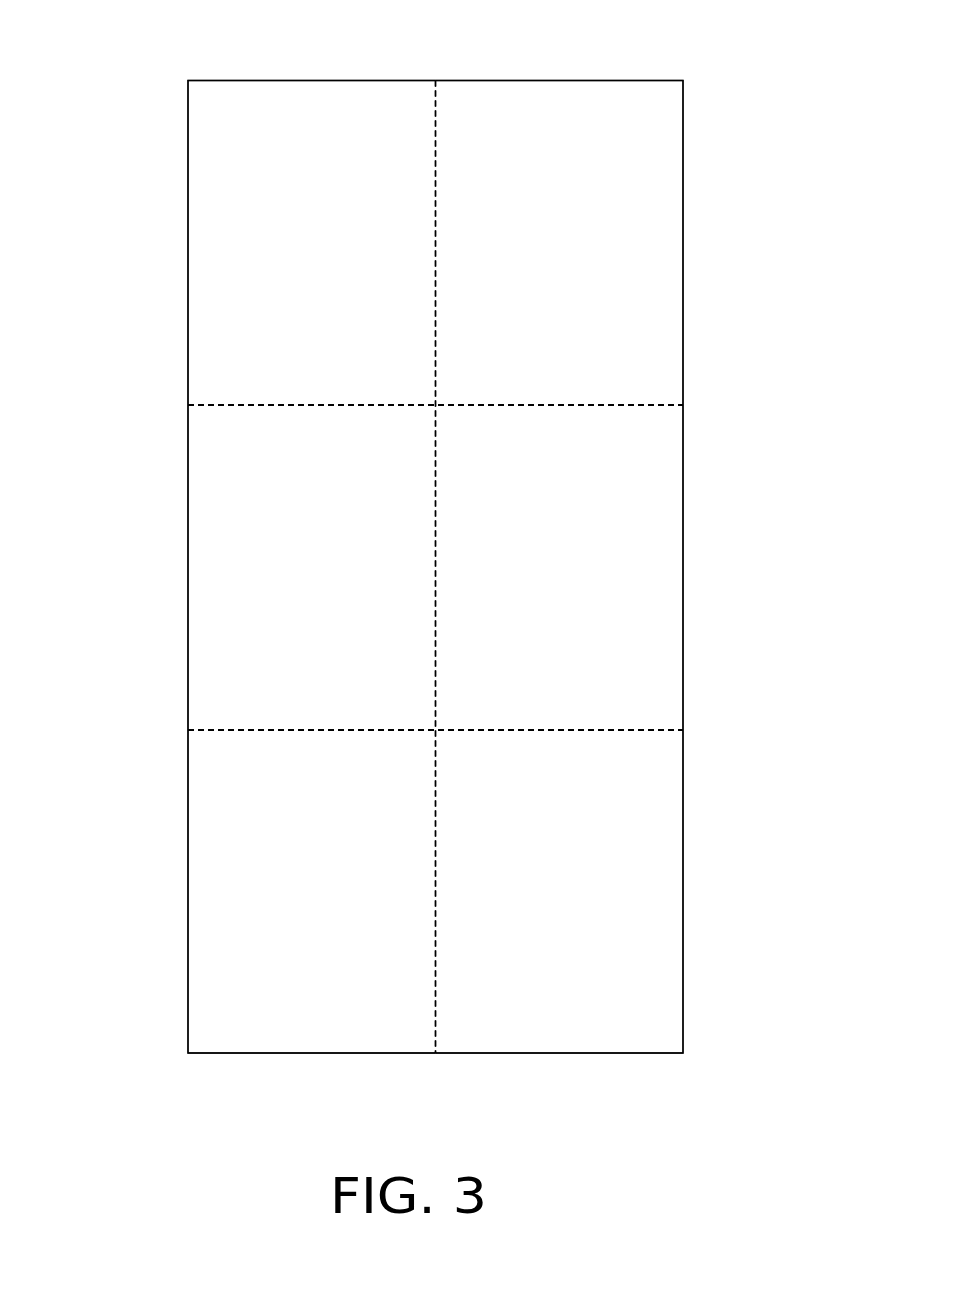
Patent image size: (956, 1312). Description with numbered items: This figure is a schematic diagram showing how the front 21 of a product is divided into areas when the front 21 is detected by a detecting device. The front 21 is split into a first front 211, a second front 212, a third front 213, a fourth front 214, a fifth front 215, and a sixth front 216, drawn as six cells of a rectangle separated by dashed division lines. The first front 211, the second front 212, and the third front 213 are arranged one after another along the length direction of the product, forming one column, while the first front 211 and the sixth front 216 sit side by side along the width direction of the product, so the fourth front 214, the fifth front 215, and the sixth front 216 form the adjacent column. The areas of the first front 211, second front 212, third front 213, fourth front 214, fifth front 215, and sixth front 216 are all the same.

The front 21 is at (449, 30).
The first front 211 is at (227, 905).
The second front 212 is at (228, 581).
The third front 213 is at (228, 257).
The fourth front 214 is at (643, 257).
The fifth front 215 is at (643, 582).
The sixth front 216 is at (643, 906).